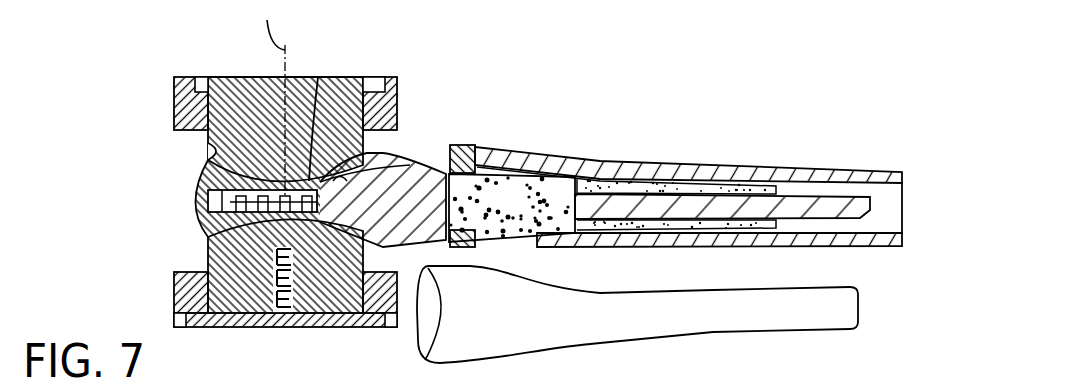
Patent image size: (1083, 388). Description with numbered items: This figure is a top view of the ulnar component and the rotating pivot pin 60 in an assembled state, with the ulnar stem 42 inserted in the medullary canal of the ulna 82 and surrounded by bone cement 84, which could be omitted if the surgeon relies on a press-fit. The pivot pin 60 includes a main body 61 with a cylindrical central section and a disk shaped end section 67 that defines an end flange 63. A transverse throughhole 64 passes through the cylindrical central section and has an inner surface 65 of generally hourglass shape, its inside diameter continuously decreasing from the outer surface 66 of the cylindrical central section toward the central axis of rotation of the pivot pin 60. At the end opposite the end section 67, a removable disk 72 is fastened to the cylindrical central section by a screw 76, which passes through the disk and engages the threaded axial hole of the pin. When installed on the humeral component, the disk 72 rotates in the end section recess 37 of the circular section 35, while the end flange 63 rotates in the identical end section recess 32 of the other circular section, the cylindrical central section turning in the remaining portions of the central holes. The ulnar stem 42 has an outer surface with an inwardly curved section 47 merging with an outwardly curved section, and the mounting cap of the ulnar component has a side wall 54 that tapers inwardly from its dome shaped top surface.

The annular end section recess 32 is at (386, 77).
The circular section 35 is at (390, 100).
The annular end section recess 37 is at (188, 328).
The stem 42 is at (787, 200).
The inwardly curved section 47 is at (415, 162).
The side wall 54 is at (210, 150).
The pivot pin 60 is at (183, 256).
The main body 61 is at (347, 60).
The end flange 63 is at (198, 77).
The transverse throughhole 64 is at (200, 227).
The inner surface 65 is at (318, 77).
The outer surface 66 is at (338, 293).
The end section 67 is at (222, 97).
The removable disk 72 is at (373, 327).
The screw 76 is at (279, 320).
The ulna 82 is at (820, 172).
The cement 84 is at (642, 172).